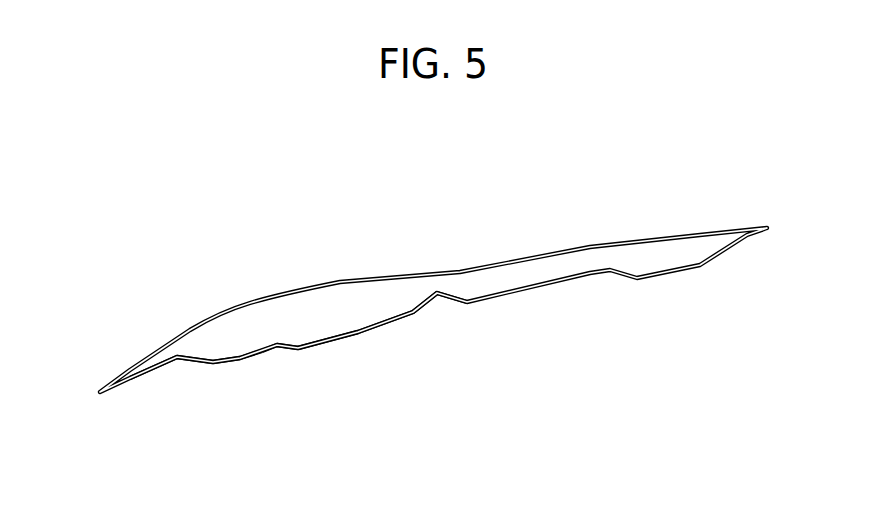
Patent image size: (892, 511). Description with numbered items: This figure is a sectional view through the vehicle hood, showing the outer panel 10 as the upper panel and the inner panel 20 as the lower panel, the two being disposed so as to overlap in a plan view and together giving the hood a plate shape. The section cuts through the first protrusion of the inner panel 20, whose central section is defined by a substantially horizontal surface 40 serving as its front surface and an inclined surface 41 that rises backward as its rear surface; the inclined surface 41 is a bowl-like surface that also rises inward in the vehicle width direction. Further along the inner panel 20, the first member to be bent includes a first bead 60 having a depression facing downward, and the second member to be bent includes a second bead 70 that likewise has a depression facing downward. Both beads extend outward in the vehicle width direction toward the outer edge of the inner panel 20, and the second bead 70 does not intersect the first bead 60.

The outer panel 10 is at (202, 323).
The inner panel 20 is at (188, 363).
The horizontal surface 40 is at (238, 363).
The inclined surface 41 is at (360, 333).
The first bead 60 is at (280, 348).
The second bead 70 is at (437, 298).